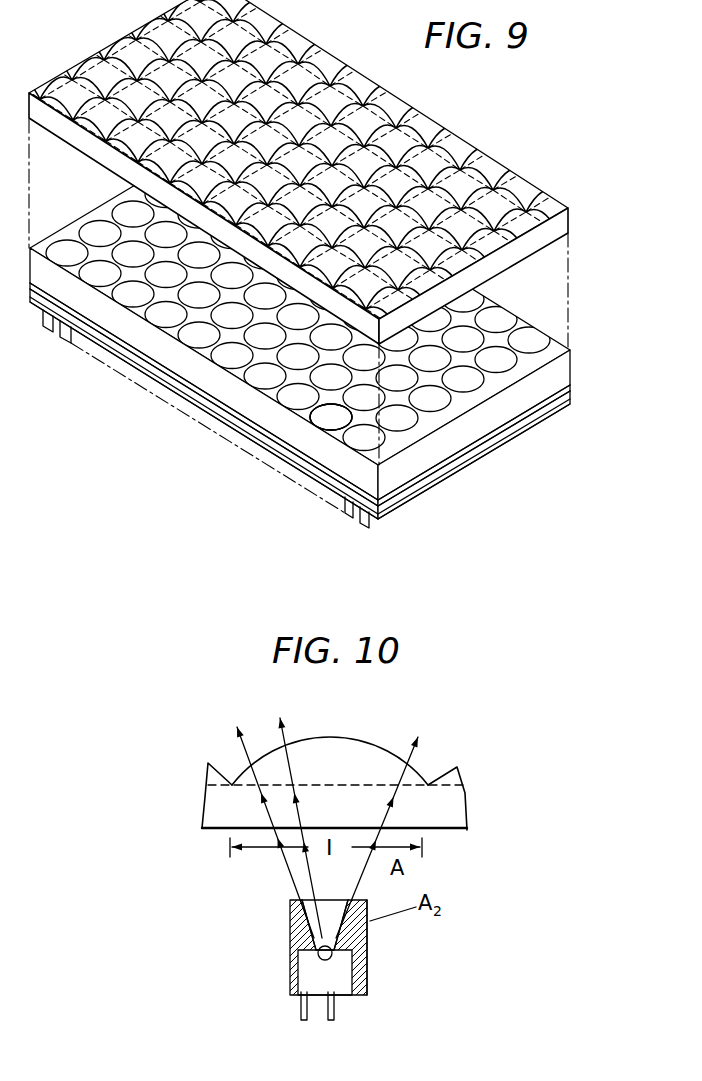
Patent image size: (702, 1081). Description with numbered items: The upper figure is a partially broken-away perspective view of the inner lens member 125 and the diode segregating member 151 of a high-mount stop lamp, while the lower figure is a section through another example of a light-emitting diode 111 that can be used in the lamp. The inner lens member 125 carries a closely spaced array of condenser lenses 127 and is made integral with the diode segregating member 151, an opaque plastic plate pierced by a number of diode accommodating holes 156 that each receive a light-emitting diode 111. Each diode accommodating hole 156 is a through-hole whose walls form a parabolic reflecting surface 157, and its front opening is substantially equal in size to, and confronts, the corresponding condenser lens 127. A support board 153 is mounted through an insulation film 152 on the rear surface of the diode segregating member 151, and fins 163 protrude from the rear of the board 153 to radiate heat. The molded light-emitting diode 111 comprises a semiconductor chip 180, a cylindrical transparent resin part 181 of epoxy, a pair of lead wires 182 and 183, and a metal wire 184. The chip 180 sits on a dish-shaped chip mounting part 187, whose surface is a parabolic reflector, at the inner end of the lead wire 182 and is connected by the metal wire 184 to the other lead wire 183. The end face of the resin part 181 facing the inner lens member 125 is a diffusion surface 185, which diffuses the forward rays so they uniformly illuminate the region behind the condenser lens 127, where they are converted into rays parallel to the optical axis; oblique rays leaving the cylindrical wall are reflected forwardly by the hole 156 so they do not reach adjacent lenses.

In FIG. 9, the inner lens member 125 is at (568, 220).
In FIG. 10, the inner lens member 125 is at (467, 805).
In FIG. 9, the condenser lens 127 is at (540, 187).
In FIG. 10, the condenser lens 127 is at (368, 752).
In FIG. 9, the diode segregating member 151 is at (538, 392).
In FIG. 9, the insulation film 152 is at (497, 435).
In FIG. 9, the support board 153 is at (452, 466).
In FIG. 9, the diode accommodating hole 156 is at (328, 420).
In FIG. 9, the parabolic reflecting surface 157 is at (308, 417).
In FIG. 9, the fin 163 is at (378, 520).
In FIG. 10, the semiconductor chip 180 is at (333, 956).
In FIG. 10, the transparent resin part 181 is at (365, 992).
In FIG. 10, the lead wire 182 is at (333, 1012).
In FIG. 10, the lead wire 183 is at (303, 1012).
In FIG. 10, the metal wire 184 is at (291, 925).
In FIG. 10, the diffusion surface 185 is at (320, 903).
In FIG. 10, the chip mounting part 187 is at (346, 940).
In FIG. 10, the light-emitting diode 111 is at (384, 942).